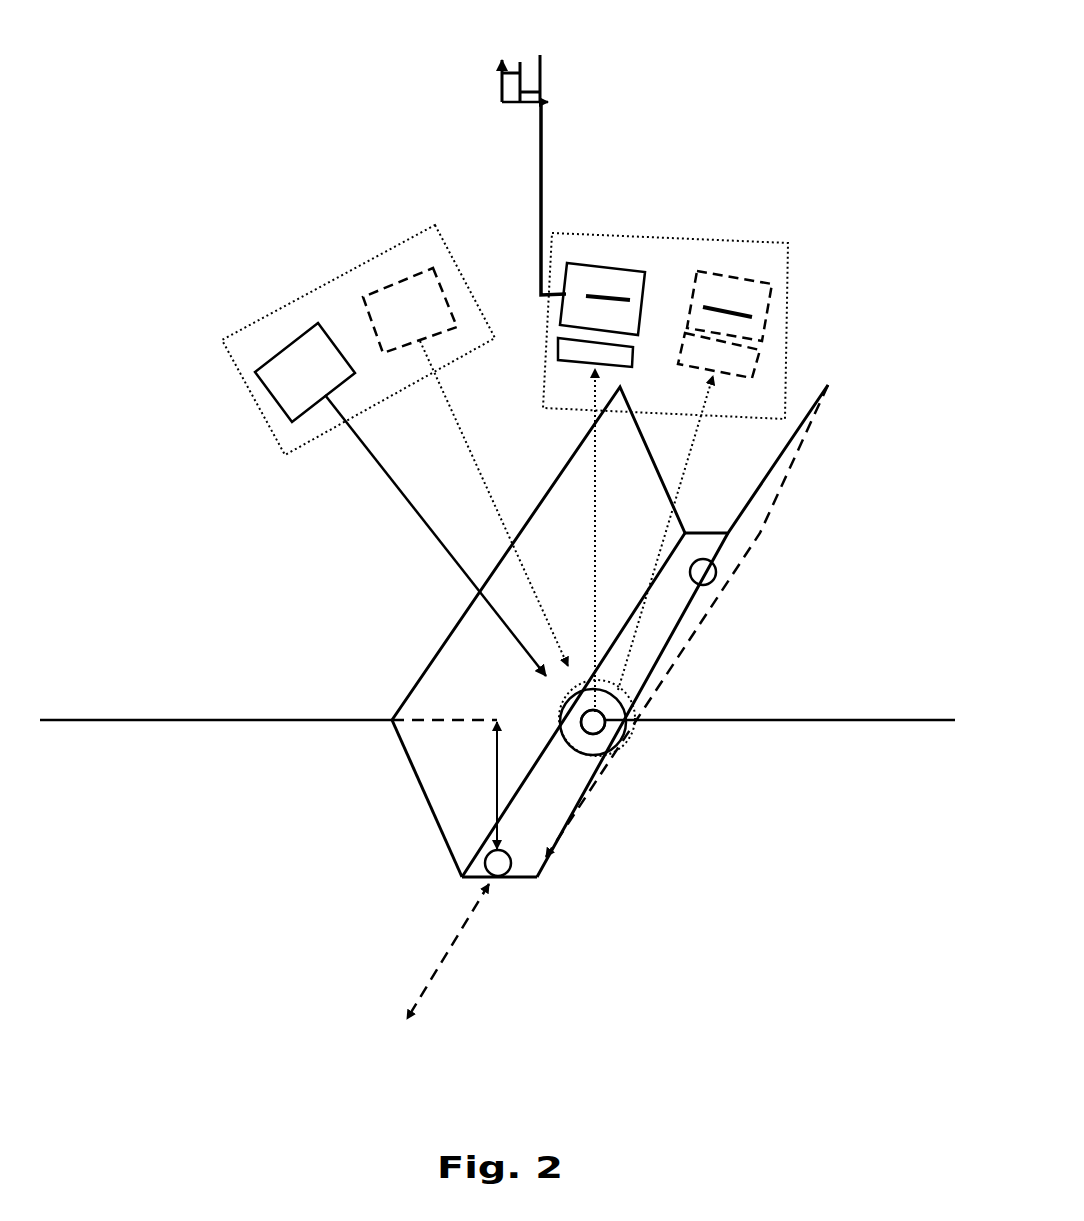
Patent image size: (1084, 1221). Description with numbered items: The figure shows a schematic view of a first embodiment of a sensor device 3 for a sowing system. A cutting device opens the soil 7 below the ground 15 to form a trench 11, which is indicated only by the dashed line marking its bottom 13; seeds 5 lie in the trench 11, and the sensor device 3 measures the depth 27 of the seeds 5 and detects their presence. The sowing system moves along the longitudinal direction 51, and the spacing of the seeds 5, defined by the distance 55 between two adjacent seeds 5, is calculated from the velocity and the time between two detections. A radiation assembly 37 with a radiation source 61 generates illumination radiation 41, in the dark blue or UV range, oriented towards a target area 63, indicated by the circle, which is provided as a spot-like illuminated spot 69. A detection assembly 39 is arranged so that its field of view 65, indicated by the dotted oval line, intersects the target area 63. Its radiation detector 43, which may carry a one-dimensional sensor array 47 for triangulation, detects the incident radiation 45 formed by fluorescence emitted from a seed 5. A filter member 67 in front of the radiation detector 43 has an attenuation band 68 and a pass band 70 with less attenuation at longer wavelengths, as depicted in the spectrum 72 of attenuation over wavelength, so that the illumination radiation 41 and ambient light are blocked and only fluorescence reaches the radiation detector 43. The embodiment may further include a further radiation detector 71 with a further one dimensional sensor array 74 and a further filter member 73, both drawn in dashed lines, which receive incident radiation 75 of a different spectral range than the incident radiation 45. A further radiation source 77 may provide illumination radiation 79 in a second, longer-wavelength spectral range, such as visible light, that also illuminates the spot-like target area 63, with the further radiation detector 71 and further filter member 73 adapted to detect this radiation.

The sensor device 3 is at (670, 252).
The seed 5 is at (716, 580).
The soil 7 is at (352, 827).
The trench 11 is at (497, 656).
The bottom 13 is at (524, 878).
The ground 15 is at (190, 718).
The depth 27 is at (495, 750).
The radiation assembly 37 is at (336, 306).
The detection assembly 39 is at (684, 240).
The illumination radiation 41 is at (380, 470).
The radiation detector 43 is at (575, 260).
The incident radiation 45 is at (597, 475).
The one-dimensional sensor array 47 is at (608, 296).
The longitudinal direction 51 is at (468, 920).
The distance 55 is at (541, 800).
The radiation source 61 is at (283, 346).
The target area 63 is at (562, 723).
The field of view 65 is at (600, 683).
The filter member 67 is at (558, 350).
The attenuation band 68 is at (510, 104).
The illuminated spot 69 is at (628, 712).
The pass band 70 is at (535, 104).
The further radiation detector 71 is at (768, 320).
The spectrum 72 is at (478, 175).
The further filter member 73 is at (756, 367).
The further one dimensional sensor array 74 is at (730, 310).
The incident radiation 75 is at (690, 447).
The further radiation source 77 is at (382, 290).
The illumination radiation 79 is at (462, 430).